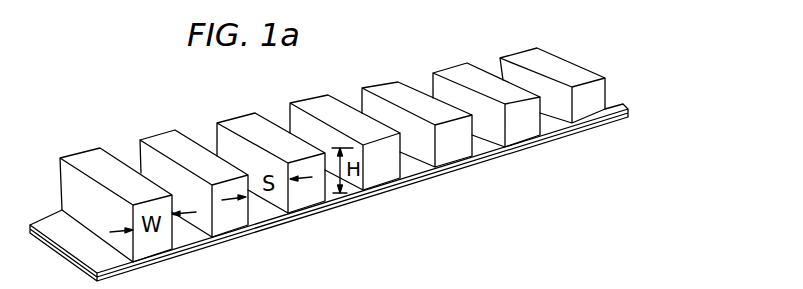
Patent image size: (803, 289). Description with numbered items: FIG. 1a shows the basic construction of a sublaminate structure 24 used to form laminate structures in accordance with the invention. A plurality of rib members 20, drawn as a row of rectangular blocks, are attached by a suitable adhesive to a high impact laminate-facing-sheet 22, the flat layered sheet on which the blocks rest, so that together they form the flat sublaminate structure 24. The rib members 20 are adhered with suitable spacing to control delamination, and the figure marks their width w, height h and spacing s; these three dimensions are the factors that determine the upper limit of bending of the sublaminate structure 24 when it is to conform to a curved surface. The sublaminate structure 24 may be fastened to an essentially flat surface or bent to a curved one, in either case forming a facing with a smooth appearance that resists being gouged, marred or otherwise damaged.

The rib members 20 is at (242, 118).
The high impact laminate-facing-sheet 22 is at (383, 191).
The sublaminate structure 24 is at (353, 146).